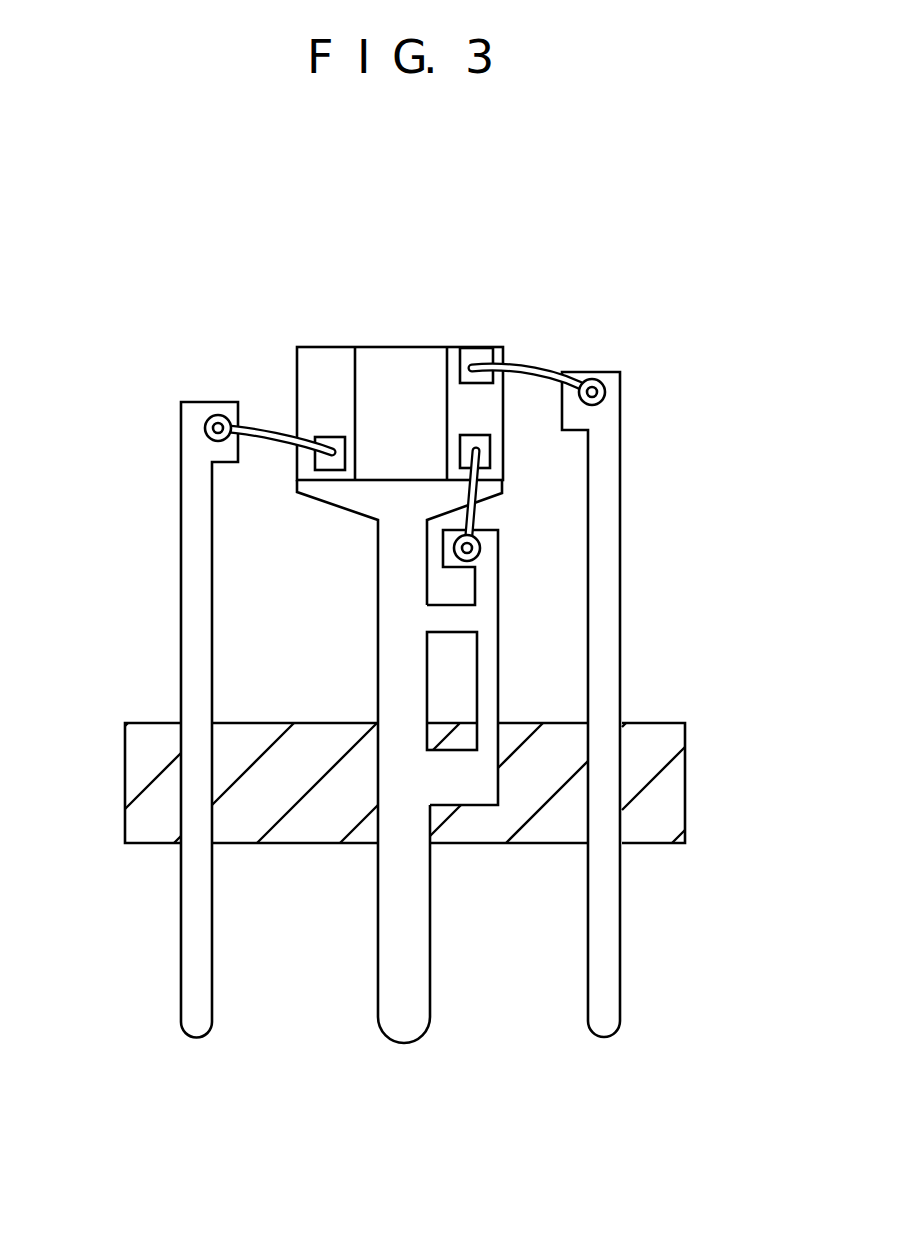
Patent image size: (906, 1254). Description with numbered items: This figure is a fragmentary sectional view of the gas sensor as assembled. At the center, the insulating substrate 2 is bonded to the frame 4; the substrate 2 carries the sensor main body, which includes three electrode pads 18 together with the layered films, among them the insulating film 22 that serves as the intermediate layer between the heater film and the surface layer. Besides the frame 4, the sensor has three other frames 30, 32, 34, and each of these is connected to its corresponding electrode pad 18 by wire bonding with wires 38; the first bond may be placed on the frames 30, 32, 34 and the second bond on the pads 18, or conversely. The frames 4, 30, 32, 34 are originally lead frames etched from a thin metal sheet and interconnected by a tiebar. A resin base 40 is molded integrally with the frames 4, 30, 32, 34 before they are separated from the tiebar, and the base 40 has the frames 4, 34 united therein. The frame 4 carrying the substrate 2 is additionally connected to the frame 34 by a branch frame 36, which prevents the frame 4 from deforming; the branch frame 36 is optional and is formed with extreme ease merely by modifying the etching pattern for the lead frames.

The insulating substrate 2 is at (335, 347).
The insulating film 22 is at (395, 347).
The electrode pads 18 is at (475, 347).
The wires 38 is at (538, 362).
The frame 30 is at (193, 605).
The frame 32 is at (607, 598).
The frame 4 is at (395, 627).
The branch frame 36 is at (463, 617).
The frame 34 is at (490, 660).
The resin base 40 is at (680, 781).